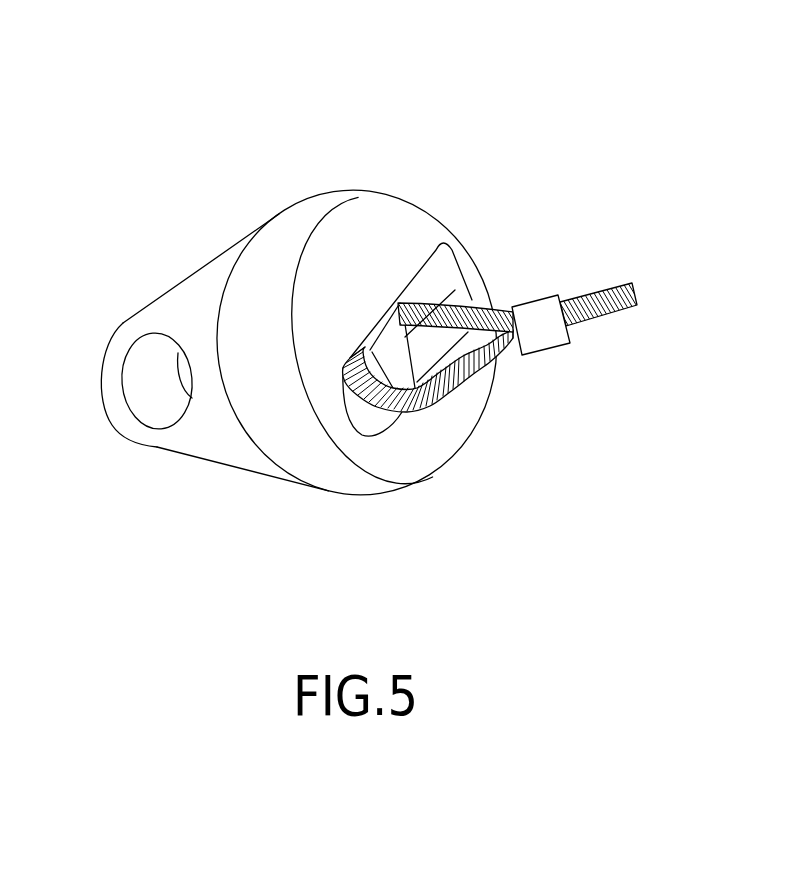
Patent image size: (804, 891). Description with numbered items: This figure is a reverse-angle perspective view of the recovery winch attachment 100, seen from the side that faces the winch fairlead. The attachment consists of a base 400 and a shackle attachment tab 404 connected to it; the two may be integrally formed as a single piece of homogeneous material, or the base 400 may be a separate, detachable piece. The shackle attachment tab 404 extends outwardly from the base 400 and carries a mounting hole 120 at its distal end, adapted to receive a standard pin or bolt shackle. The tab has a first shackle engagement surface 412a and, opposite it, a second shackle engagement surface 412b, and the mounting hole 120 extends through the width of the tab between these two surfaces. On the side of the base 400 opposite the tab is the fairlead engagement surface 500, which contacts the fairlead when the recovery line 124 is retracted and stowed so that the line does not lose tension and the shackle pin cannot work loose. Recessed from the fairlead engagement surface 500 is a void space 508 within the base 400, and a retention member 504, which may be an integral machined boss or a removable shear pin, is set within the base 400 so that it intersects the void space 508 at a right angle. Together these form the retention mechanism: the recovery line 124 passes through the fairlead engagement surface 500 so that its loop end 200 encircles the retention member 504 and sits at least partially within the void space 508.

The recovery winch attachment 100 is at (190, 52).
The mounting hole 120 is at (137, 402).
The recovery line 124 is at (600, 289).
The loop end 200 is at (490, 370).
The base 400 is at (288, 227).
The shackle attachment tab 404 is at (202, 452).
The first shackle engagement surface 412a is at (212, 326).
The second shackle engagement surface 412b is at (196, 254).
The fairlead engagement surface 500 is at (387, 218).
The retention member 504 is at (440, 297).
The void space 508 is at (373, 420).